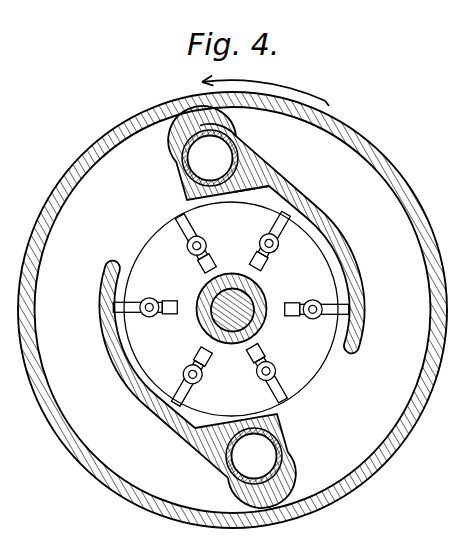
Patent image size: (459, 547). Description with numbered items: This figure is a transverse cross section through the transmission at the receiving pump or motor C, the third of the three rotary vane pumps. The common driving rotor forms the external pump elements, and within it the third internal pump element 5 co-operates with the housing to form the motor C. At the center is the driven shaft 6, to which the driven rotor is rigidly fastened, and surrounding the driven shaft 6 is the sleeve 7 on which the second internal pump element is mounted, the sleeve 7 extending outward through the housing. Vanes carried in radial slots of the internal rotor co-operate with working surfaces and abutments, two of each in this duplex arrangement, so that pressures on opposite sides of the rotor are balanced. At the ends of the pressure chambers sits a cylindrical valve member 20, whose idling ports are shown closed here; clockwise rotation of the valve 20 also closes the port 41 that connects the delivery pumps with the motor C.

The receiving pump or motor C is at (232, 310).
The third internal pump element 5 is at (231, 309).
The driven shaft 6 is at (214, 299).
The sleeve 7 is at (261, 299).
The cylindrical valve member 20 is at (237, 133).
The port 41 is at (263, 181).